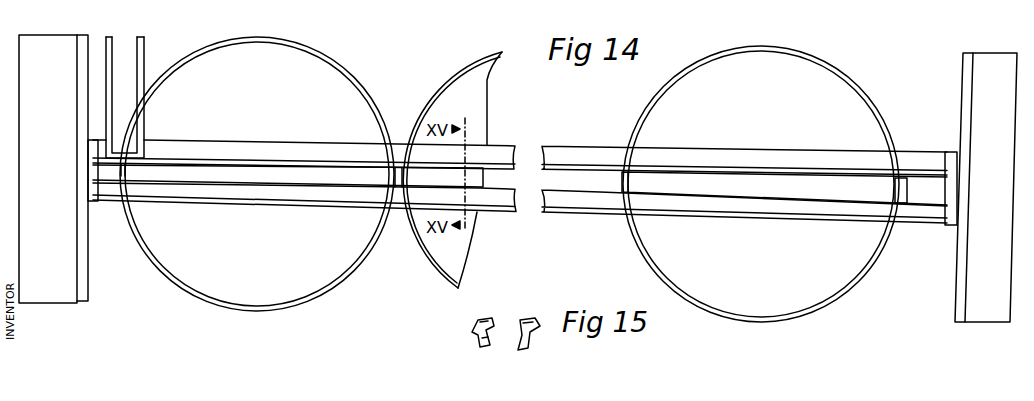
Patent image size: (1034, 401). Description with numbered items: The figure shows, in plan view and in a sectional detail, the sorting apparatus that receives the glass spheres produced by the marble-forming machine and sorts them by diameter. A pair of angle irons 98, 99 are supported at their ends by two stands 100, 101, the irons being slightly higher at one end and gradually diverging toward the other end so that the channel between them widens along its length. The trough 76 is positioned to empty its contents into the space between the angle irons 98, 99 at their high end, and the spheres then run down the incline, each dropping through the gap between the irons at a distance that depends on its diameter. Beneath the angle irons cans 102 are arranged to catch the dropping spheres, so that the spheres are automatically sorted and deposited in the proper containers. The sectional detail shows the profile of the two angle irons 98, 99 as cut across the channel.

In FIG. 14, the trough 76 is at (125, 50).
In FIG. 14, the angle iron 98 is at (515, 147).
In FIG. 15, the angle iron 98 is at (535, 346).
In FIG. 14, the angle iron 99 is at (515, 213).
In FIG. 15, the angle iron 99 is at (478, 341).
In FIG. 14, the stand 100 is at (58, 169).
In FIG. 14, the stand 101 is at (981, 187).
In FIG. 14, the can 102 is at (437, 90).